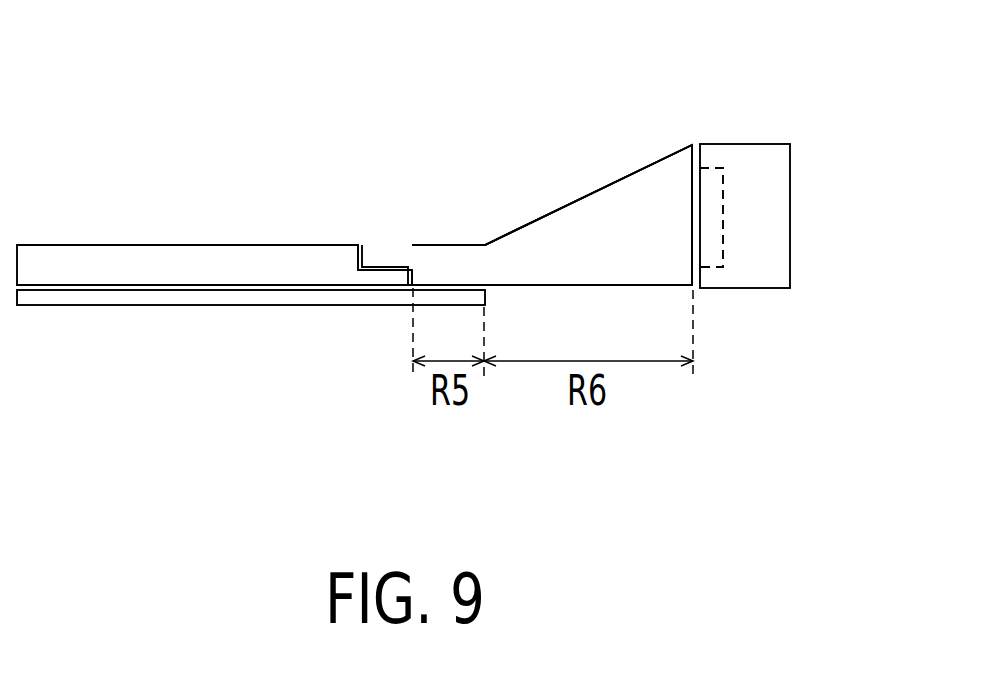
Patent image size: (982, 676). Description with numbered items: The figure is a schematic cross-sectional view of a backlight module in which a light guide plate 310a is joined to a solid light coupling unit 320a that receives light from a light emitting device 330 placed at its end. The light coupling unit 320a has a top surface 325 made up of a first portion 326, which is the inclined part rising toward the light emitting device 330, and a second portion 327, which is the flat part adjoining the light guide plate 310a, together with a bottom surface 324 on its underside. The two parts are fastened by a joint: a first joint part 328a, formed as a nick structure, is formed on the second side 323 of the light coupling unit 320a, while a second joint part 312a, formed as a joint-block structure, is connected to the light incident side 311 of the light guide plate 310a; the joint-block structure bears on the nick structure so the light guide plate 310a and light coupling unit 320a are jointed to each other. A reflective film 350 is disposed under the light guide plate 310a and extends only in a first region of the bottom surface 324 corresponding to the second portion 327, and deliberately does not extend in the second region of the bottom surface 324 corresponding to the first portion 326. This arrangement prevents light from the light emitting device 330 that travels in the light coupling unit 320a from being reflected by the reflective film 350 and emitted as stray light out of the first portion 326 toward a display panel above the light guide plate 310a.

The light guide plate 310a is at (137, 257).
The light incident side 311 is at (358, 263).
The second joint part 312a is at (392, 278).
The second side 323 is at (375, 254).
The bottom surface 324 is at (638, 286).
The top surface 325 is at (613, 90).
The first portion 326 is at (573, 201).
The second portion 327 is at (470, 244).
The first joint part 328a is at (383, 283).
The light coupling unit 320a is at (689, 161).
The light emitting device 330 is at (773, 218).
The reflective film 350 is at (138, 297).